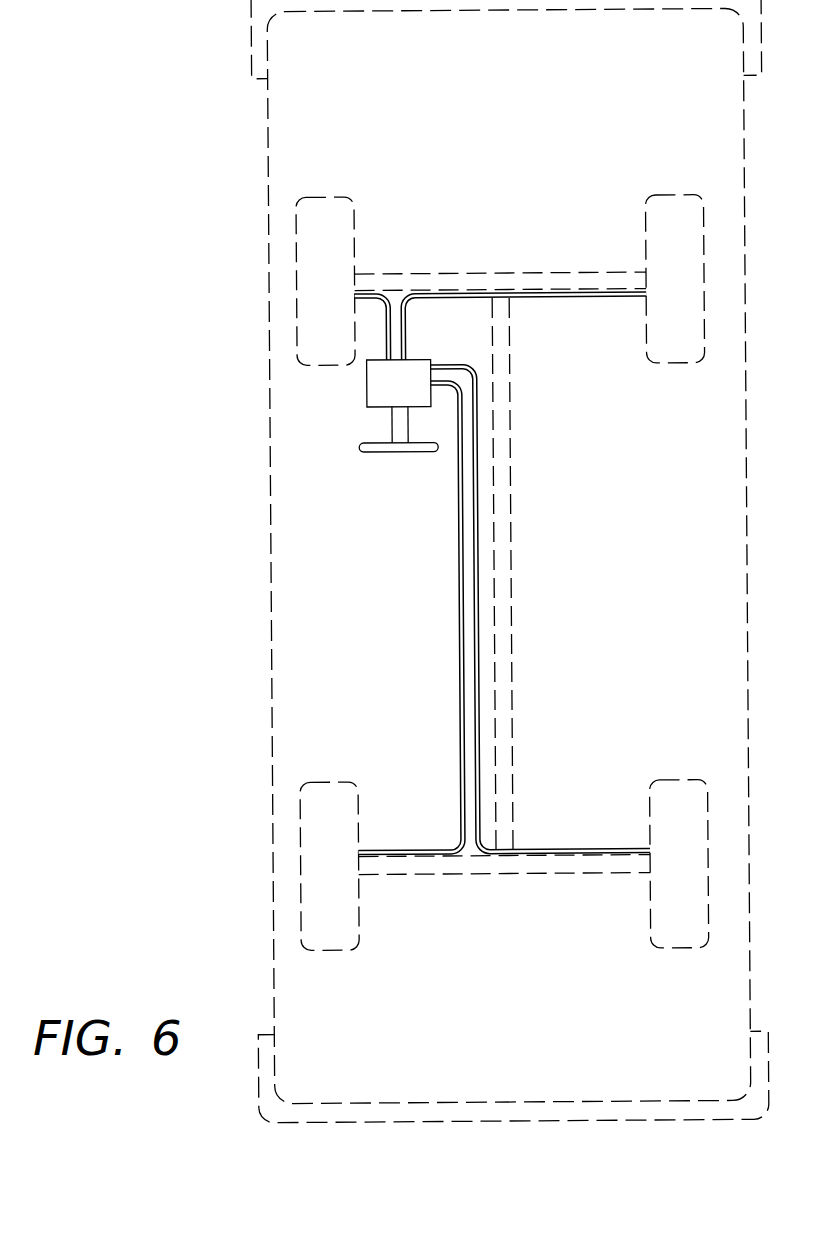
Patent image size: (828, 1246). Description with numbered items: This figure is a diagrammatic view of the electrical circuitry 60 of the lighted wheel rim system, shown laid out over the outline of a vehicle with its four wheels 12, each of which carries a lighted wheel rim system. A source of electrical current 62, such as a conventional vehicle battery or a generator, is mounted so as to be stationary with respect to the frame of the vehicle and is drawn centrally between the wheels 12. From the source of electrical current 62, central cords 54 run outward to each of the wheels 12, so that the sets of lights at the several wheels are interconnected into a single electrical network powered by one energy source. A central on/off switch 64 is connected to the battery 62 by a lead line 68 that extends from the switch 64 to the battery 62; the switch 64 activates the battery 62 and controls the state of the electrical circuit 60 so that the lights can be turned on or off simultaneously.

The electrical circuitry 60 is at (300, 126).
The wheel 12 is at (313, 248).
The central cord 54 is at (371, 293).
The source of electrical current 62 is at (385, 392).
The central switch 64 is at (419, 448).
The lead line 68 is at (394, 425).